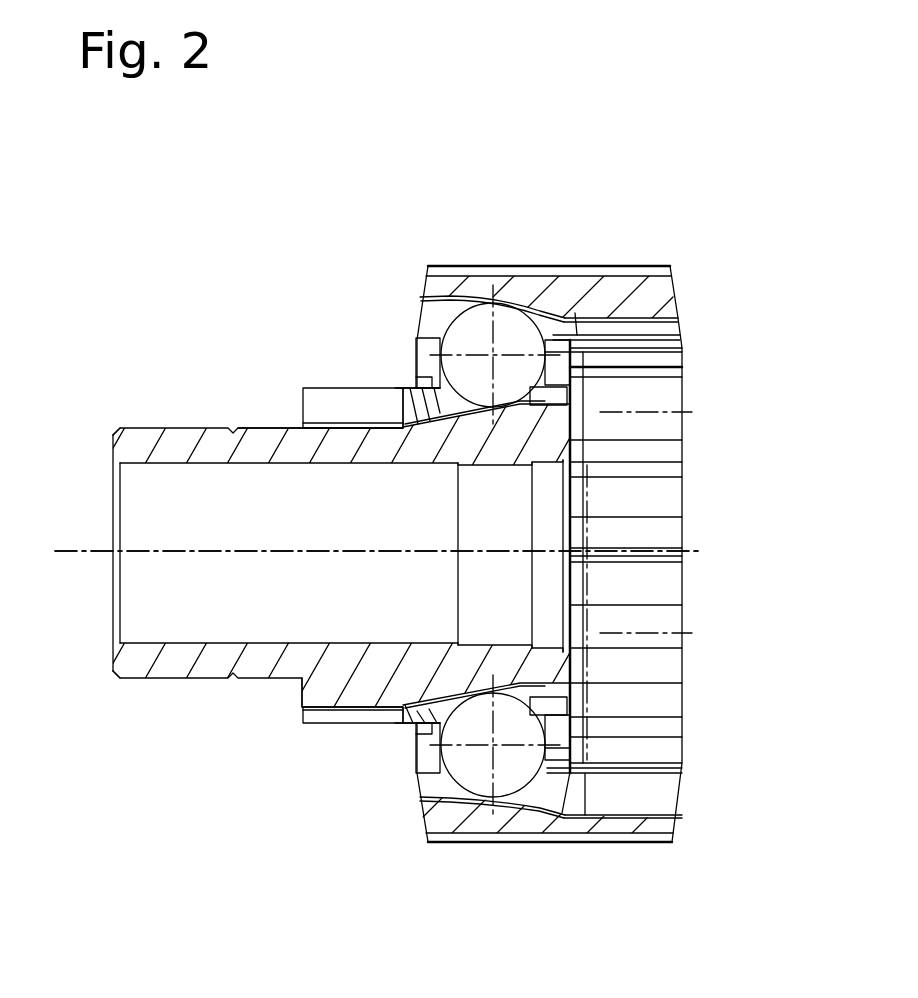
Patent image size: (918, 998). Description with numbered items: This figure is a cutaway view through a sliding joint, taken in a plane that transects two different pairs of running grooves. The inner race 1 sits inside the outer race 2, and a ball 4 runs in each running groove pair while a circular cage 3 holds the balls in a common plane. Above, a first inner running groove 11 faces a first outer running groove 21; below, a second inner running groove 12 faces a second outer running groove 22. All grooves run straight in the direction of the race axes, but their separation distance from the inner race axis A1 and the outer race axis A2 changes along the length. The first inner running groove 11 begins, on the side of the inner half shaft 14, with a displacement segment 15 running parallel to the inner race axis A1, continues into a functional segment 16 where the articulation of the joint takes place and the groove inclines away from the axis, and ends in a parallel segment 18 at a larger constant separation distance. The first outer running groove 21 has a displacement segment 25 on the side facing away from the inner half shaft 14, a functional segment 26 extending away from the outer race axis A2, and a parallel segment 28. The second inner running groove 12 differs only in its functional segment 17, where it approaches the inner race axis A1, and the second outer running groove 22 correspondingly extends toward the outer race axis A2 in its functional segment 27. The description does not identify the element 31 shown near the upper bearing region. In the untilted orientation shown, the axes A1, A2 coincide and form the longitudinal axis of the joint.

The inner race 1 is at (543, 432).
The outer race 2 is at (668, 298).
The cage 3 is at (567, 357).
The ball 4 is at (555, 412).
The first inner running groove 11 is at (373, 403).
The second inner running groove 12 is at (360, 715).
The inner half shaft 14 is at (135, 445).
The displacement segment 15 is at (347, 425).
The functional segment 16 is at (416, 388).
The functional segment 17 is at (432, 718).
The parallel segment 18 is at (565, 404).
The first outer running groove 21 is at (450, 307).
The second outer running groove 22 is at (573, 790).
The displacement segment 25 is at (628, 317).
The functional segment 26 is at (497, 315).
The functional segment 27 is at (522, 812).
The parallel segment 28 is at (432, 332).
The seal ring 31 is at (556, 327).
The inner race axis A1 is at (165, 555).
The outer race axis A2 is at (377, 647).